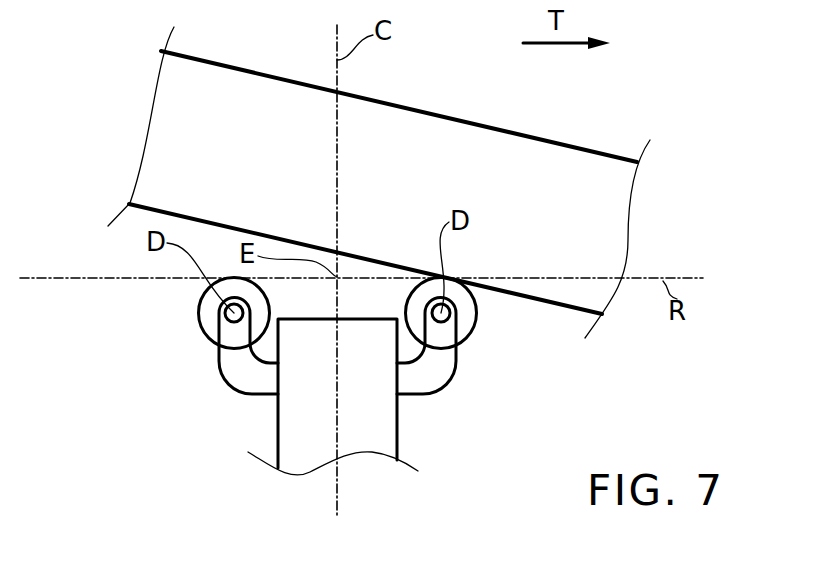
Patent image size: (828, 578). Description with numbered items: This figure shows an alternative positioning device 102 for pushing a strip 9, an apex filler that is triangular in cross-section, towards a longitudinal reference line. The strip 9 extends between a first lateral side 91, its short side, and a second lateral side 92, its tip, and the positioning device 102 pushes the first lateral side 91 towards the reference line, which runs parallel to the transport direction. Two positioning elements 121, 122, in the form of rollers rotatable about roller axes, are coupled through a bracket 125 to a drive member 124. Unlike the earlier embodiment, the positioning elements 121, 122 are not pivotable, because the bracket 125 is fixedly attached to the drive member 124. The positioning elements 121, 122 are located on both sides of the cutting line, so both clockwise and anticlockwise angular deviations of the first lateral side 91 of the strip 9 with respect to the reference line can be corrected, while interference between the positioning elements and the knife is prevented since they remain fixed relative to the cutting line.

The strip 9 is at (379, 193).
The first lateral side 91 is at (550, 308).
The second lateral side 92 is at (255, 72).
The alternative positioning device 102 is at (329, 407).
The positioning element 121 is at (467, 322).
The positioning element 122 is at (204, 318).
The drive member 124 is at (372, 443).
The bracket 125 is at (428, 374).